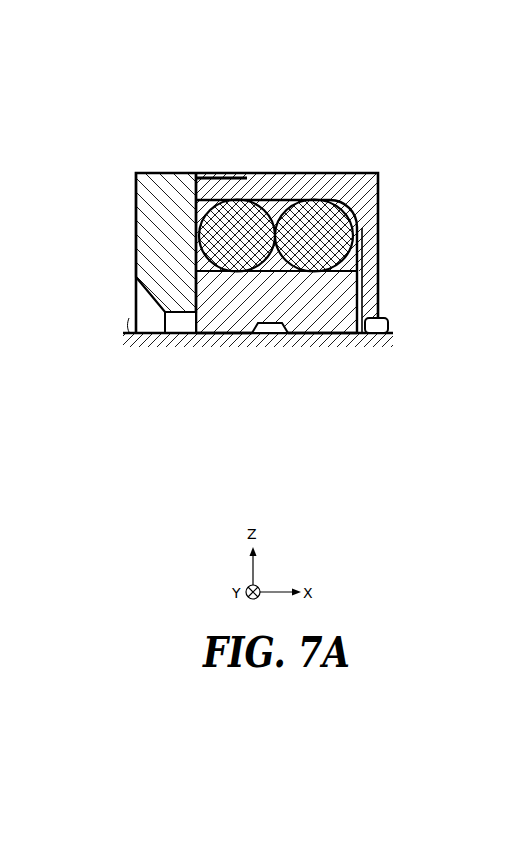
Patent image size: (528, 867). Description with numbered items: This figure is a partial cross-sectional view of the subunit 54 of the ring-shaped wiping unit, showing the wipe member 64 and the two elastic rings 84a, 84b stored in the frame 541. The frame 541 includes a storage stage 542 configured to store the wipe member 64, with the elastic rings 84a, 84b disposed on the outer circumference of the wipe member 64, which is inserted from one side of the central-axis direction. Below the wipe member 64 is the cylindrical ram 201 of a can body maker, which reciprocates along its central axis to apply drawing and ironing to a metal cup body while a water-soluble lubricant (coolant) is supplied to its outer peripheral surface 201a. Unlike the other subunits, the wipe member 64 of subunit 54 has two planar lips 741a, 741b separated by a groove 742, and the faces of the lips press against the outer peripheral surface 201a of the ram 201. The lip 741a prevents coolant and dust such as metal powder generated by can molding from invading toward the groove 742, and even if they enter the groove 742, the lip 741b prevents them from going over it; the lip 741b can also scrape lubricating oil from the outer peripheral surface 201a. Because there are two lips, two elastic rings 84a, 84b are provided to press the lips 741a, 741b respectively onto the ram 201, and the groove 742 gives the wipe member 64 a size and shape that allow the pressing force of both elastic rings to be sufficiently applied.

The subunit 54 is at (305, 121).
The frame 541 is at (346, 186).
The storage stage 542 is at (298, 187).
The elastic ring 84a is at (200, 241).
The elastic ring 84b is at (353, 232).
The wipe member 64 is at (354, 285).
The ram 201 is at (398, 340).
The outer peripheral surface 201a is at (382, 318).
The lip 741a is at (228, 336).
The lip 741b is at (328, 336).
The groove 742 is at (270, 336).